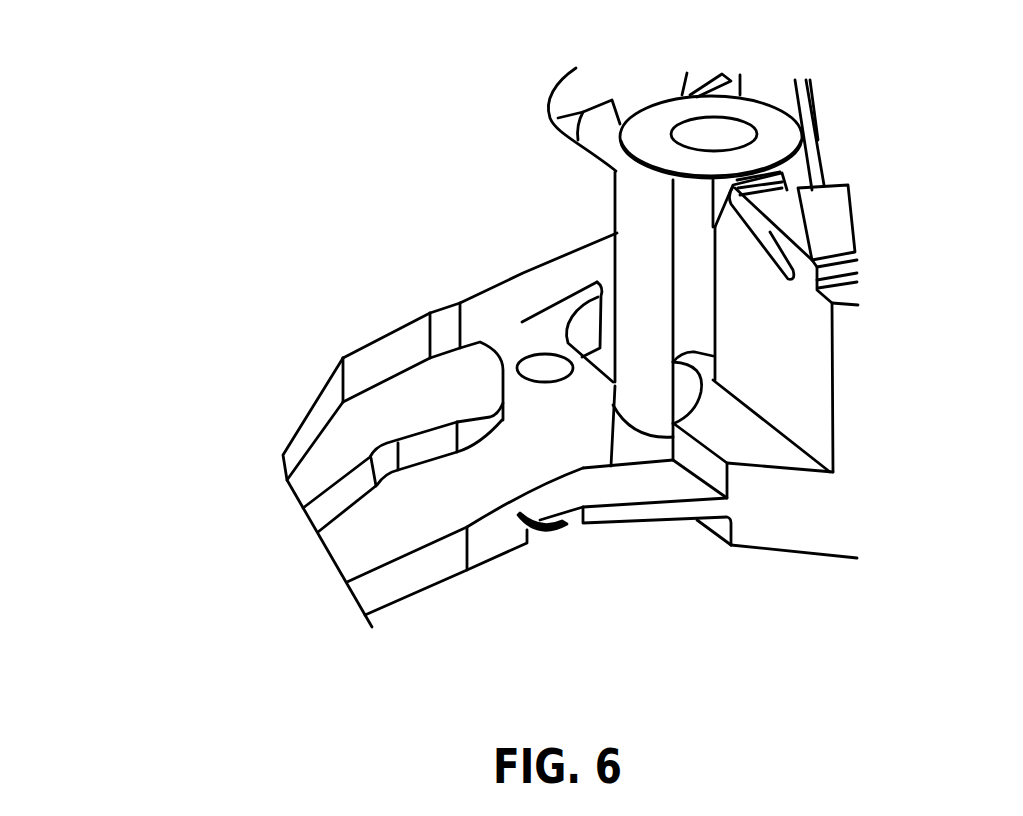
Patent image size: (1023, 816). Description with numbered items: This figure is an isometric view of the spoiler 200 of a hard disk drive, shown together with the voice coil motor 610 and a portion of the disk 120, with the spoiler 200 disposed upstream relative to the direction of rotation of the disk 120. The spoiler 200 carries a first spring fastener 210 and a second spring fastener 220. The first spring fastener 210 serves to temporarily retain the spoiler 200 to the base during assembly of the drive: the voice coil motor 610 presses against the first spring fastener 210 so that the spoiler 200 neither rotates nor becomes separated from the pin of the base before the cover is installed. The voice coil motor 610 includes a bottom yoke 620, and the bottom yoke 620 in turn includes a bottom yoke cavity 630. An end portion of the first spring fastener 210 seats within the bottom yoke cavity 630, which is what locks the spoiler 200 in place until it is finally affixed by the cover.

The disk 120 is at (827, 102).
The spoiler 200 is at (806, 554).
The first spring fastener 210 is at (603, 511).
The second spring fastener 220 is at (813, 233).
The voice coil motor 610 is at (353, 298).
The bottom yoke 620 is at (385, 587).
The bottom yoke cavity 630 is at (520, 550).